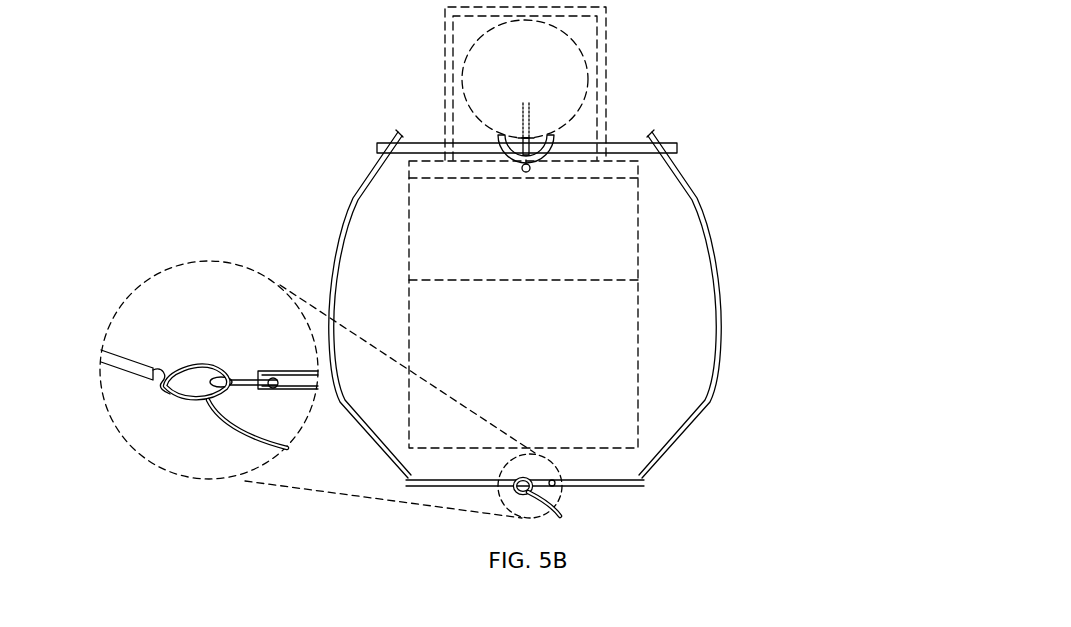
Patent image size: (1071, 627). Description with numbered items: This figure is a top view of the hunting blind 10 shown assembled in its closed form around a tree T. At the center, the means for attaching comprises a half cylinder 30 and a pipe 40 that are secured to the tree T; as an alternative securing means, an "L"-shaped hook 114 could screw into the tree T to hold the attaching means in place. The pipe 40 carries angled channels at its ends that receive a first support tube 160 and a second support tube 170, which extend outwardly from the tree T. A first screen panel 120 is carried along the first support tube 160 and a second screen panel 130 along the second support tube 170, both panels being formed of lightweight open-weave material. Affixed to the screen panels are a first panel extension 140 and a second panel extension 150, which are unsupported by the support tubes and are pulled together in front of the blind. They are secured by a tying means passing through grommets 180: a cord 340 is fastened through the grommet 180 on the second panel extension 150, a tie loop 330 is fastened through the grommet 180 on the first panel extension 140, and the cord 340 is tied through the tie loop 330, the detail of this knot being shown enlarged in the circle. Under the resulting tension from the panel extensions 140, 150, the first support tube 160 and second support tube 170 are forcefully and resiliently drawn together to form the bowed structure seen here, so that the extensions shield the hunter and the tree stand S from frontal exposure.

The hunting blind 10 is at (833, 158).
The half cylinder 30 is at (560, 143).
The pipe 40 is at (586, 144).
The "L"-shaped hook 114 is at (526, 172).
The first screen panel 120 is at (330, 265).
The second screen panel 130 is at (725, 355).
The first panel extension 140 is at (457, 487).
The second panel extension 150 is at (297, 383).
The first support tube 160 is at (343, 237).
The second support tube 170 is at (720, 300).
The grommets 180 is at (257, 367).
The tie loop 330 is at (175, 408).
The cord 340 is at (263, 443).
The tree T is at (525, 80).
The tree stand S is at (638, 237).